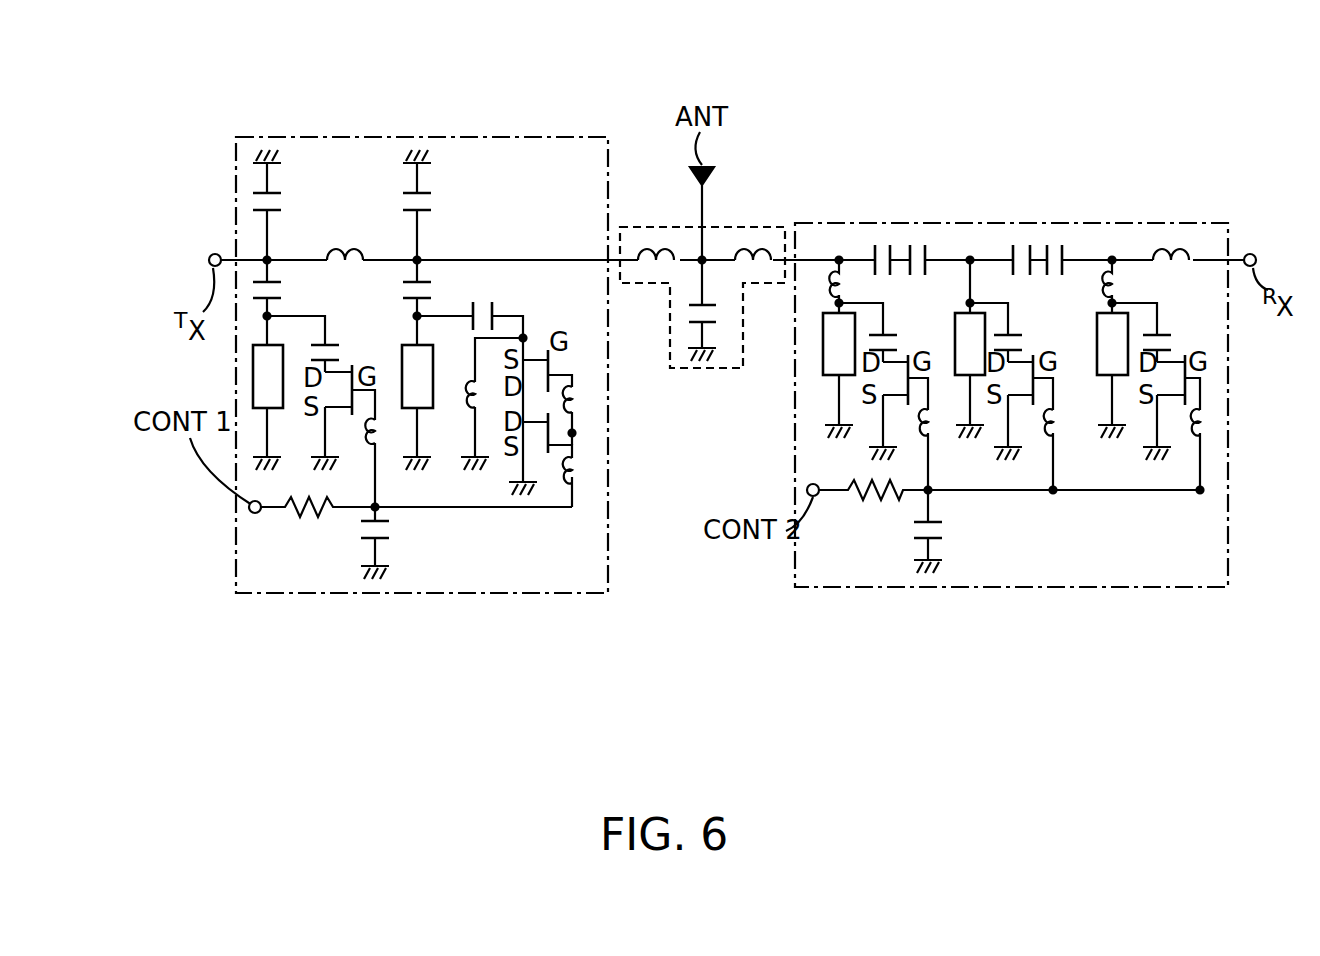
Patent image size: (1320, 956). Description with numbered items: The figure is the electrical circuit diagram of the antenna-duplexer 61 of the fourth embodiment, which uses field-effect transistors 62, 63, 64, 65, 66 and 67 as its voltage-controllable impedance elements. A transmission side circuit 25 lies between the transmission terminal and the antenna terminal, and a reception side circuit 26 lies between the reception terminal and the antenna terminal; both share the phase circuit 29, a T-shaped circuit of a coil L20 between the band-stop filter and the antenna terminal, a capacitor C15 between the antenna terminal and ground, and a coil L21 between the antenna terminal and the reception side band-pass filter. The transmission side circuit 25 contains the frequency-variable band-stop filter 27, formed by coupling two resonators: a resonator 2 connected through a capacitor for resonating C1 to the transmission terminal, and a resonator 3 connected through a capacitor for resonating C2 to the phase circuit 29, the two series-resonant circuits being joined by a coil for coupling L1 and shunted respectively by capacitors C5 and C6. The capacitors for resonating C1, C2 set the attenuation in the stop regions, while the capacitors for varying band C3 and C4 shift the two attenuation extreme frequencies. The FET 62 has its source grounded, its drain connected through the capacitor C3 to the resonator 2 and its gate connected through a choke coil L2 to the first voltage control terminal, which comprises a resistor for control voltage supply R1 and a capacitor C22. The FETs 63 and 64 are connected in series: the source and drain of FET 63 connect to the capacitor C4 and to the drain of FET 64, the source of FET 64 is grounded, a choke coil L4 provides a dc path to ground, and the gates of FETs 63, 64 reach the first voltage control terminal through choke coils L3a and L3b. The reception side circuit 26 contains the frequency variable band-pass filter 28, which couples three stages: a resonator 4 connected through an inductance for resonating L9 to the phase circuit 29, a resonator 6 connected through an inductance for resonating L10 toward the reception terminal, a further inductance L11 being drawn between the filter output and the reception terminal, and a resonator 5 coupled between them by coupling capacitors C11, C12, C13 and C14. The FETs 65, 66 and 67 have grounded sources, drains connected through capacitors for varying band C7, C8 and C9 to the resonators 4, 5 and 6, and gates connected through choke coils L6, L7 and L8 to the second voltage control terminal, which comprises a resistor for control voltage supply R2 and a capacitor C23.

The antenna-duplexer 61 is at (214, 121).
The transmission side circuit 25 is at (508, 98).
The reception side circuit 26 is at (950, 163).
The frequency-variable band-stop filter 27 is at (350, 137).
The frequency variable band-pass filter 28 is at (955, 223).
The phase circuit 29 is at (770, 227).
The resonator 2 is at (283, 395).
The resonator 3 is at (433, 395).
The resonator 4 is at (823, 355).
The resonator 5 is at (955, 338).
The resonator 6 is at (1097, 340).
The field-effect transistor 62 is at (352, 368).
The field-effect transistor 63 is at (549, 353).
The field-effect transistor 64 is at (582, 445).
The field-effect transistor 65 is at (918, 402).
The field-effect transistor 66 is at (1043, 402).
The field-effect transistor 67 is at (1190, 404).
The capacitor for resonating C1 is at (270, 288).
The capacitor for resonating C2 is at (420, 290).
The capacitor for varying band C3 is at (326, 342).
The capacitor for varying band C4 is at (494, 306).
The capacitor C5 is at (270, 193).
The capacitor C6 is at (420, 190).
The capacitor for varying band C7 is at (896, 334).
The capacitor for varying band C8 is at (1022, 334).
The capacitor for varying band C9 is at (1172, 334).
The coupling capacitor C11 is at (872, 252).
The coupling capacitor C12 is at (908, 252).
The coupling capacitor C13 is at (1030, 250).
The coupling capacitor C14 is at (1063, 250).
The capacitor C15 is at (706, 326).
The capacitor C22 is at (362, 545).
The capacitor C23 is at (942, 537).
The coil for coupling L1 is at (345, 258).
The choke coil L2 is at (383, 452).
The choke coil L3a is at (580, 482).
The choke coil L3b is at (580, 400).
The choke coil L4 is at (484, 412).
The choke coil L6 is at (936, 428).
The choke coil L7 is at (1061, 428).
The choke coil L8 is at (1208, 428).
The inductance for resonating L9 is at (847, 285).
The inductance for resonating L10 is at (1120, 285).
The inductor L11 is at (1178, 258).
The coil L20 is at (660, 258).
The coil L21 is at (756, 258).
The resistor for control voltage supply R1 is at (300, 515).
The resistor for control voltage supply R2 is at (868, 512).